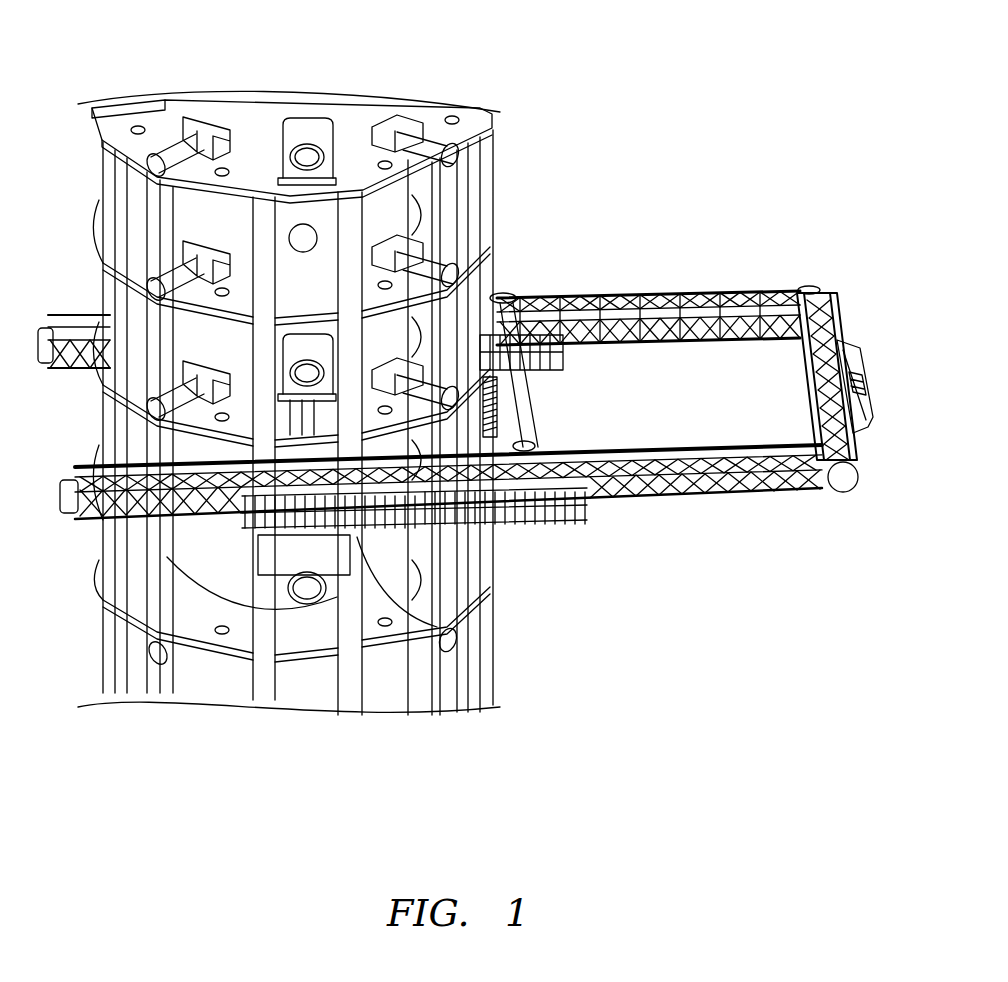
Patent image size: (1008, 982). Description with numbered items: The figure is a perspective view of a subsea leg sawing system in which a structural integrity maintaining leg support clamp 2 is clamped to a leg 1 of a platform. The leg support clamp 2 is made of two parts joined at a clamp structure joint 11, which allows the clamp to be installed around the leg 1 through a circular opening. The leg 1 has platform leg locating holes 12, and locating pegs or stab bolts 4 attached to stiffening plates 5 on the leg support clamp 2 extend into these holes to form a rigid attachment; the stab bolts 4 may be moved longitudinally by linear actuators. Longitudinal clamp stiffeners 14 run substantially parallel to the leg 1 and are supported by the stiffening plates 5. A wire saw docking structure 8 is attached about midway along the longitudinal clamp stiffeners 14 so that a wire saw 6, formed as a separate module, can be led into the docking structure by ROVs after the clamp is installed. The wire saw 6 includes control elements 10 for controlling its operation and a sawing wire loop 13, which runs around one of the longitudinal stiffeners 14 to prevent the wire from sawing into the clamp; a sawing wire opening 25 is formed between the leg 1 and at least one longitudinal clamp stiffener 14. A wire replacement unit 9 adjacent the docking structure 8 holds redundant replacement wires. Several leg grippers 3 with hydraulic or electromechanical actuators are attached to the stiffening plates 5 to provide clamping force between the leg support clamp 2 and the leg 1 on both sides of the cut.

The leg 1 is at (228, 103).
The leg support clamp 2 is at (476, 120).
The leg grippers 3 is at (150, 158).
The locating pegs or stab bolts 4 is at (305, 140).
The stiffening plates 5 is at (167, 623).
The wire saw 6 is at (733, 495).
The wire saw docking structure 8 is at (580, 520).
The wire replacement unit 9 is at (493, 397).
The control elements 10 is at (847, 343).
The clamp structure joint 11 is at (112, 108).
The platform leg locating holes 12 is at (310, 240).
The sawing wire loop 13 is at (537, 423).
The longitudinal clamp stiffeners 14 is at (262, 695).
The sawing wire opening 25 is at (503, 523).